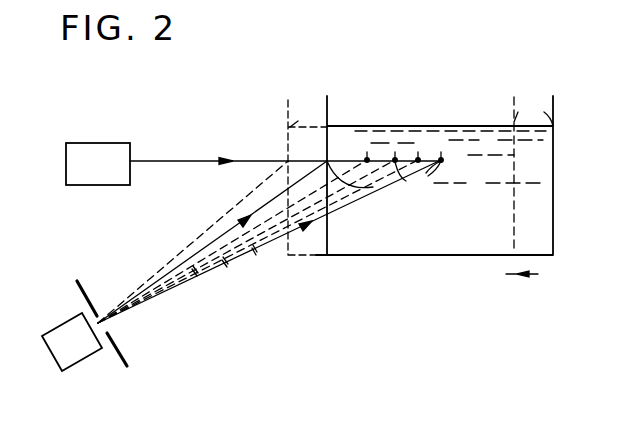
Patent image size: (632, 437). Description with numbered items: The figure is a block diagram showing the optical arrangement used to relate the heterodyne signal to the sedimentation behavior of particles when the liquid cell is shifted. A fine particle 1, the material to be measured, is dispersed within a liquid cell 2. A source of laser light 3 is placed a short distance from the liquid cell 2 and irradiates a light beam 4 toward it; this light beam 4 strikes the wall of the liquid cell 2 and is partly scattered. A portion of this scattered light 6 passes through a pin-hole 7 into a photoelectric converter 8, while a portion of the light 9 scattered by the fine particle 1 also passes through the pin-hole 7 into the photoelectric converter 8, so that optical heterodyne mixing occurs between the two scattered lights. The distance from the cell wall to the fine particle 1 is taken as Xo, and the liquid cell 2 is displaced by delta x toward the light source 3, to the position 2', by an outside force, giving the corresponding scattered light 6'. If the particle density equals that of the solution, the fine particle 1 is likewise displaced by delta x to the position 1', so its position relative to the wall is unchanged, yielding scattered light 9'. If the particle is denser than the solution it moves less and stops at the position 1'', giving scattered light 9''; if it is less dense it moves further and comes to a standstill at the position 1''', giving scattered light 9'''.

The fine particle 1 is at (438, 154).
The fine particle position 1' is at (392, 155).
The fine particle position 1'' is at (420, 145).
The fine particle position 1''' is at (376, 164).
The liquid cell 2 is at (434, 165).
The displaced liquid cell position 2' is at (304, 154).
The source of laser light 3 is at (94, 142).
The light beam 4 is at (182, 159).
The scattered light 6 is at (212, 242).
The scattered light 6' is at (193, 242).
The pin-hole 7 is at (127, 366).
The photoelectric converter 8 is at (52, 358).
The light scattered by the fine particle 9 is at (269, 241).
The scattered light 9' is at (246, 241).
The scattered light 9'' is at (258, 241).
The scattered light 9''' is at (232, 241).